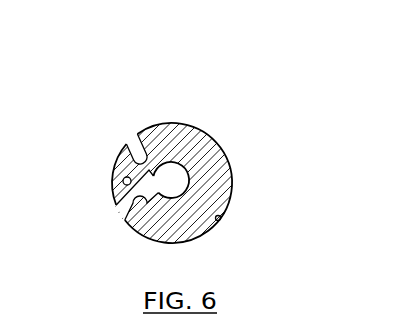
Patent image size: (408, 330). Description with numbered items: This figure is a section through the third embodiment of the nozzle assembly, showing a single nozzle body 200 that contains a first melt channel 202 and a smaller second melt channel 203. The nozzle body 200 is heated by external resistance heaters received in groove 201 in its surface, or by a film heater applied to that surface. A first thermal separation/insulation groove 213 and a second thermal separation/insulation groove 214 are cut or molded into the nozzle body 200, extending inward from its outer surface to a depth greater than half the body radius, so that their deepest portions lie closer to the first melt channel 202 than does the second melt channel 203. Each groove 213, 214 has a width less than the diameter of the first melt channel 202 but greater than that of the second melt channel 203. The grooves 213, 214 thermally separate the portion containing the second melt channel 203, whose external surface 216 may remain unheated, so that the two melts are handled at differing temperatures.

The nozzle body 200 is at (182, 132).
The groove 201 is at (220, 220).
The first melt channel 202 is at (183, 177).
The second melt channel 203 is at (124, 181).
The first thermal separation/insulation groove 213 is at (129, 148).
The second thermal separation/insulation groove 214 is at (125, 212).
The external surface 216 is at (117, 160).